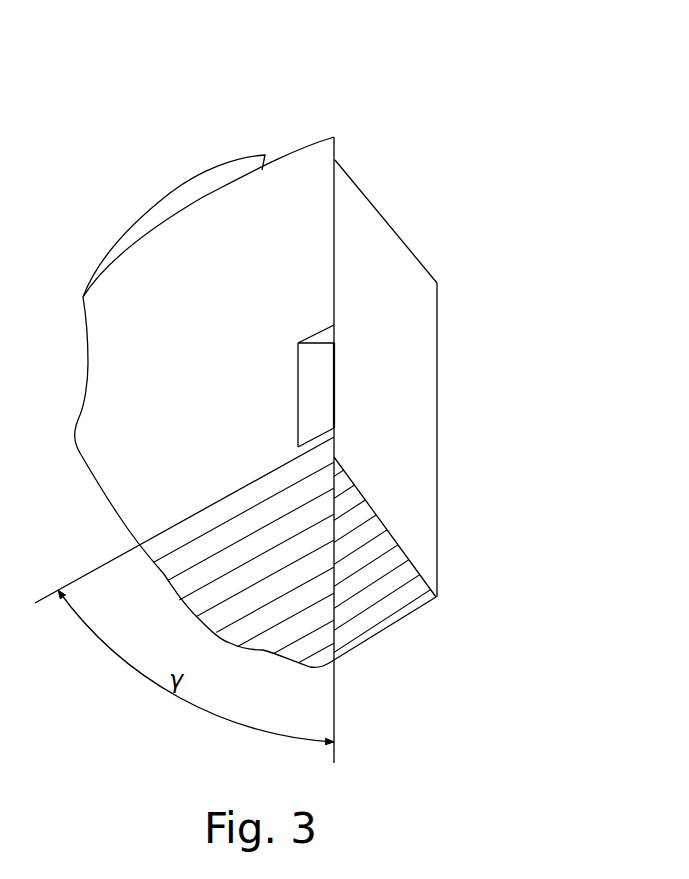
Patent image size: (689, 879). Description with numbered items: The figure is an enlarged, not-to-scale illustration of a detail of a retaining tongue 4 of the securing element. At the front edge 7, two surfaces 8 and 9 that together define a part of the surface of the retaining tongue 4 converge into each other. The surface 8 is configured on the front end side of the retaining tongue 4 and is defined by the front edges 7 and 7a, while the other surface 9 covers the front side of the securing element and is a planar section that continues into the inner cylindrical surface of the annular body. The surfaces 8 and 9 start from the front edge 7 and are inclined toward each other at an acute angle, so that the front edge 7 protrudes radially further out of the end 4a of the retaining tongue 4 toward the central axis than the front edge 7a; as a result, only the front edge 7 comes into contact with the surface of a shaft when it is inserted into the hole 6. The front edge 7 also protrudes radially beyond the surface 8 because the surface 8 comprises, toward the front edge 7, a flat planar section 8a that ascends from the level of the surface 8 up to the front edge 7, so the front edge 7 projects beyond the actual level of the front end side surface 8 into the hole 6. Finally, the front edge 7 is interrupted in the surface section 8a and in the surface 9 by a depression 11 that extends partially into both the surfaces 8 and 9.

The retaining tongue 4 is at (304, 102).
The end of the retaining tongue 4a is at (398, 558).
The hole 6 is at (345, 110).
The front edge 7 is at (335, 212).
The front edge 7a is at (437, 557).
The surface 8 is at (412, 307).
The planar section 8a is at (335, 447).
The surface 9 is at (162, 272).
The depression 11 is at (318, 360).